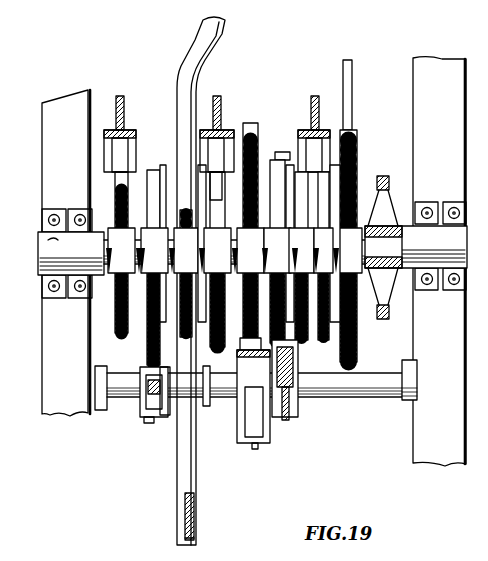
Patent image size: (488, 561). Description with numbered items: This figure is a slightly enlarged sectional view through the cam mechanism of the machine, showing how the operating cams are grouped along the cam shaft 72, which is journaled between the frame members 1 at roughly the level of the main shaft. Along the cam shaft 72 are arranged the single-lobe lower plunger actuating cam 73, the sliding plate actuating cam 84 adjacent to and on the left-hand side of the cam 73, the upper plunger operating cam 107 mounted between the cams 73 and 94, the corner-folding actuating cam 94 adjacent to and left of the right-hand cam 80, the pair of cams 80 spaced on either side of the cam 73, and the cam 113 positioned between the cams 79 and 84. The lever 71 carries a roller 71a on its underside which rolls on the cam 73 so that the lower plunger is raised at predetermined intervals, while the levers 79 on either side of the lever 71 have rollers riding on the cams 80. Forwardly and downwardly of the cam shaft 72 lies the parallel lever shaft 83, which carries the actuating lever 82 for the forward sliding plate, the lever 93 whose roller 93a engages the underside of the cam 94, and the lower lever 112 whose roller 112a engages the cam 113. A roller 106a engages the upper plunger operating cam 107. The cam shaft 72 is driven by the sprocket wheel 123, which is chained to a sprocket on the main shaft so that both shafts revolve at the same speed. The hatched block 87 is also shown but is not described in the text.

The frame member 1 is at (67, 405).
The cam shaft 72 is at (38, 256).
The levers 79 is at (120, 97).
The cams 80 is at (146, 165).
The sliding plate actuating cam 84 is at (165, 166).
The actuating lever 82 is at (225, 22).
The lever 71 is at (206, 112).
The roller 71a is at (206, 190).
The cam 73 is at (252, 124).
The actuating cam 94 is at (279, 152).
The sprocket wheel 123 is at (384, 175).
The lever shaft 83 is at (256, 395).
The cam 113 is at (153, 343).
The roller 112a is at (148, 420).
The lower lever 112 is at (152, 425).
The upper plunger operating cam 107 is at (262, 340).
The roller 106a is at (250, 418).
The roller 93a is at (299, 412).
The lever 93 is at (283, 426).
The hatched block 87 is at (199, 516).